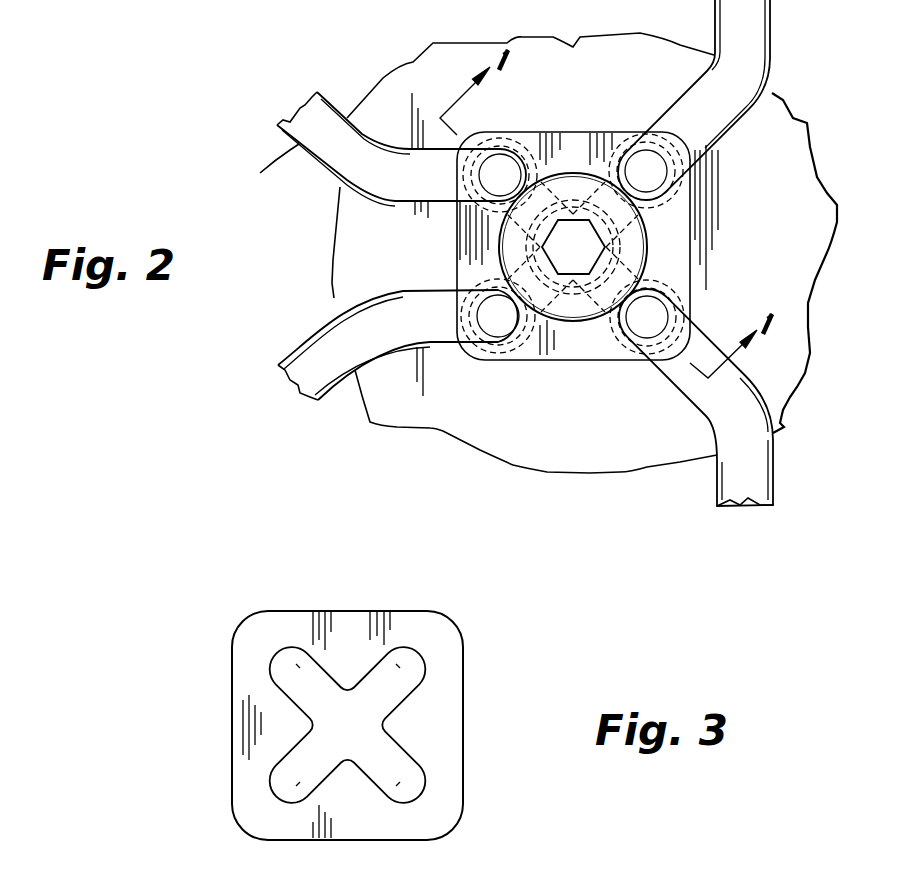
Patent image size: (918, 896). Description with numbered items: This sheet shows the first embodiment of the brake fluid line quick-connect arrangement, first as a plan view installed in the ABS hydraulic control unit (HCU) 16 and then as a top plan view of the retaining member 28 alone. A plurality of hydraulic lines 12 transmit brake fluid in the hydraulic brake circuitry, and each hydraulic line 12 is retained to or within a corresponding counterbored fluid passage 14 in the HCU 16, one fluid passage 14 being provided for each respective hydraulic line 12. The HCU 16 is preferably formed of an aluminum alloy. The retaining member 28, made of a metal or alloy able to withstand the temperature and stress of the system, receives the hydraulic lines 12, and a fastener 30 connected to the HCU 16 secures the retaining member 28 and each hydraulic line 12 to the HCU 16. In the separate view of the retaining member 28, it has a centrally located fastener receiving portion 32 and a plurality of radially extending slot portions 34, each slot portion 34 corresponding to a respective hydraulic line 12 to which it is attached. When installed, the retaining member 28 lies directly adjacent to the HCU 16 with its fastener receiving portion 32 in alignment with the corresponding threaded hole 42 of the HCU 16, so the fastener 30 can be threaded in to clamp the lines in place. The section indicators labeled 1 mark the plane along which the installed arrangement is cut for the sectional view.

In FIG. 2, the section line 1- 1 is at (606, 214).
In FIG. 2, the hydraulic line 12 is at (298, 152).
In FIG. 2, the counterbored fluid passage 14 is at (195, 6).
In FIG. 2, the ABS hydraulic control unit (HCU) 16 is at (777, 110).
In FIG. 2, the retaining member 28 is at (673, 237).
In FIG. 3, the retaining member 28 is at (323, 611).
In FIG. 2, the fastener 30 is at (576, 178).
In FIG. 3, the fastener receiving portion 32 is at (318, 716).
In FIG. 2, the slot portion 34 is at (572, 244).
In FIG. 3, the slot portion 34 is at (290, 665).
In FIG. 2, the threaded hole 42 is at (512, 100).